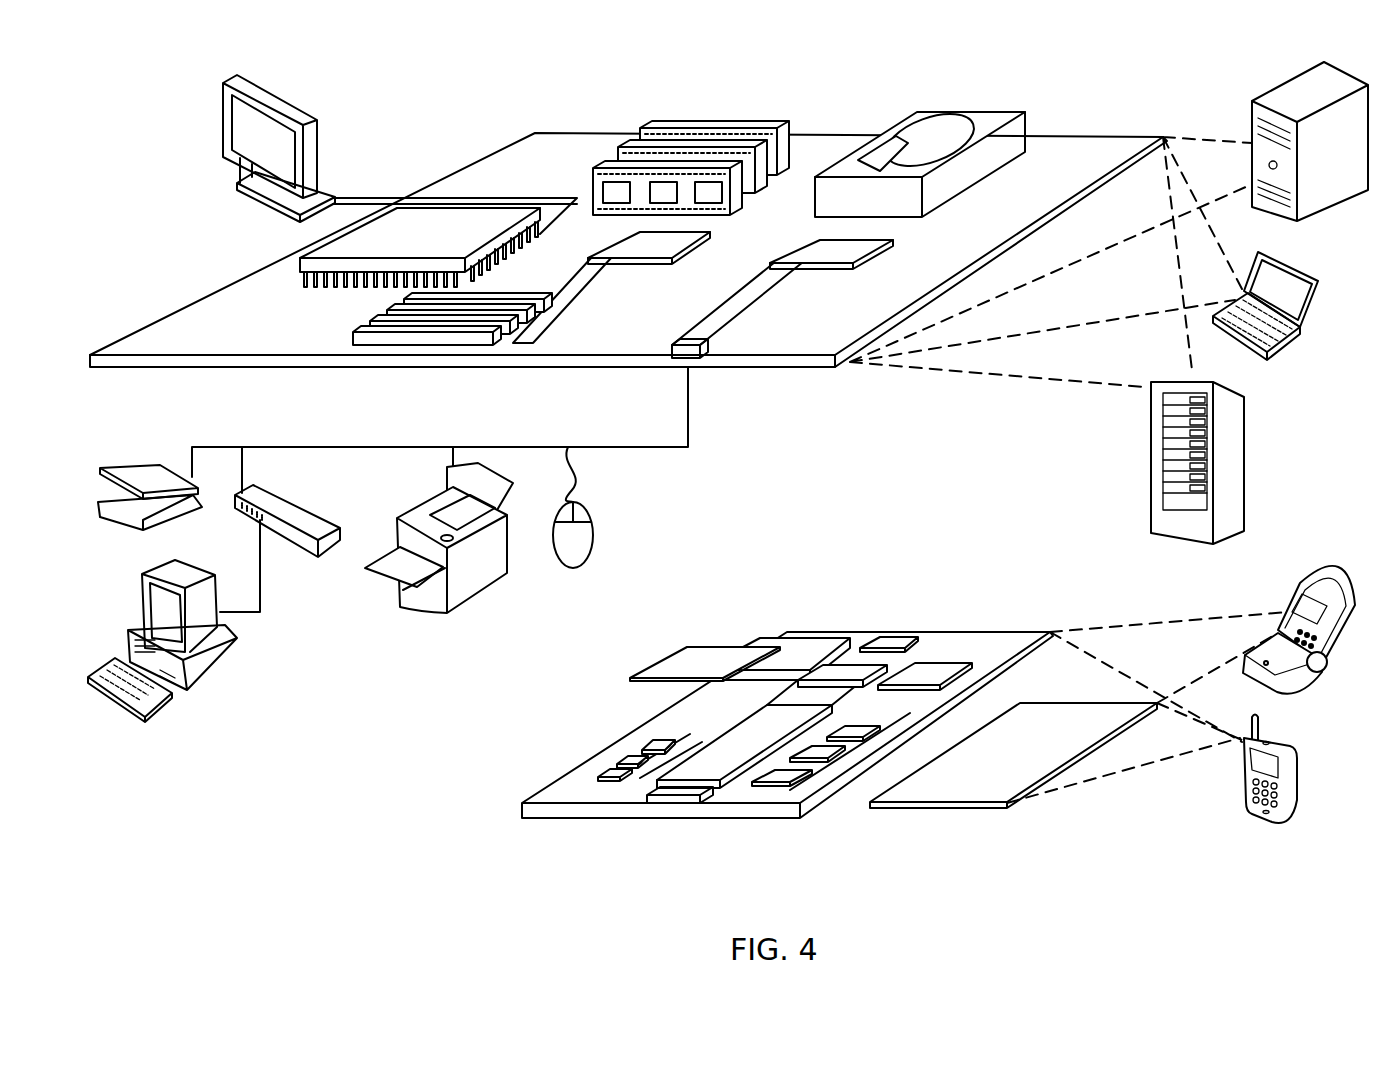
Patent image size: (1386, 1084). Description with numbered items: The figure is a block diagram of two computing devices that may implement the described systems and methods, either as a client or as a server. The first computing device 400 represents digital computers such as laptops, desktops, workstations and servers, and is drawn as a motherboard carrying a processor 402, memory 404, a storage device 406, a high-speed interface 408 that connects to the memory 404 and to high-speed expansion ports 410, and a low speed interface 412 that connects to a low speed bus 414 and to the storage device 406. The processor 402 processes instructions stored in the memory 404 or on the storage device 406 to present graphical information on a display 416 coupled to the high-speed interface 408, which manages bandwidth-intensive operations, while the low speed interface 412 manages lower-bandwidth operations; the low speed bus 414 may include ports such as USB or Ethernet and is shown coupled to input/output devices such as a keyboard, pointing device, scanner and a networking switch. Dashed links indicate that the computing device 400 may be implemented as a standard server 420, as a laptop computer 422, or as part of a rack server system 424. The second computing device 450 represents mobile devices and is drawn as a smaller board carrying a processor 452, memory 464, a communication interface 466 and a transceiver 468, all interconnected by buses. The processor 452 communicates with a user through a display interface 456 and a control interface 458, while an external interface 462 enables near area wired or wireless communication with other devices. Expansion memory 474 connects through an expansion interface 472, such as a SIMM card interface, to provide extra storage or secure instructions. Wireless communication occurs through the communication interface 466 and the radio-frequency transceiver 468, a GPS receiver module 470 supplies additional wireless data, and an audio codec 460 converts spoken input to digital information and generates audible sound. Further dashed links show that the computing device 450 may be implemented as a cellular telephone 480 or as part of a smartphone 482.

The computing device 400 is at (432, 108).
The processor 402 is at (302, 263).
The memory 404 is at (658, 126).
The storage device 406 is at (917, 113).
The high-speed interface 408 is at (625, 244).
The high-speed expansion ports 410 is at (387, 327).
The low speed interface 412 is at (812, 242).
The low speed bus 414 is at (703, 358).
The display 416 is at (226, 83).
The standard server 420 is at (1252, 108).
The laptop computer 422 is at (1320, 283).
The rack server system 424 is at (1151, 480).
The computing device 450 is at (500, 818).
The processor 452 is at (713, 772).
The display interface 456 is at (787, 777).
The control interface 458 is at (823, 755).
The audio codec 460 is at (852, 733).
The external interface 462 is at (677, 800).
The memory 464 is at (633, 762).
The communication interface 466 is at (840, 672).
The transceiver 468 is at (925, 670).
The GPS receiver module 470 is at (893, 635).
The expansion interface 472 is at (762, 650).
The expansion memory 474 is at (688, 647).
The cellular telephone 480 is at (1300, 583).
The smartphone 482 is at (1243, 773).